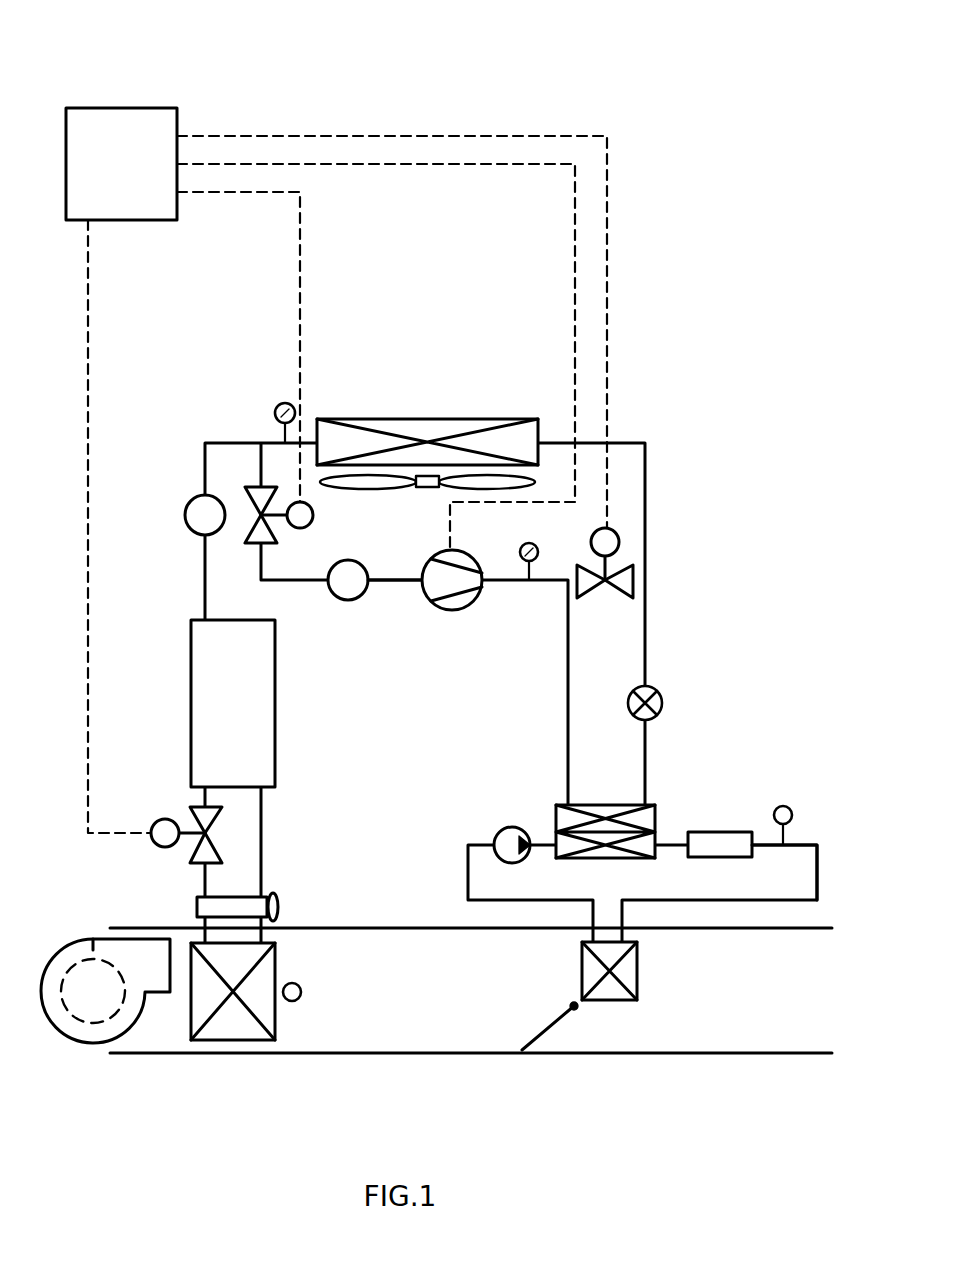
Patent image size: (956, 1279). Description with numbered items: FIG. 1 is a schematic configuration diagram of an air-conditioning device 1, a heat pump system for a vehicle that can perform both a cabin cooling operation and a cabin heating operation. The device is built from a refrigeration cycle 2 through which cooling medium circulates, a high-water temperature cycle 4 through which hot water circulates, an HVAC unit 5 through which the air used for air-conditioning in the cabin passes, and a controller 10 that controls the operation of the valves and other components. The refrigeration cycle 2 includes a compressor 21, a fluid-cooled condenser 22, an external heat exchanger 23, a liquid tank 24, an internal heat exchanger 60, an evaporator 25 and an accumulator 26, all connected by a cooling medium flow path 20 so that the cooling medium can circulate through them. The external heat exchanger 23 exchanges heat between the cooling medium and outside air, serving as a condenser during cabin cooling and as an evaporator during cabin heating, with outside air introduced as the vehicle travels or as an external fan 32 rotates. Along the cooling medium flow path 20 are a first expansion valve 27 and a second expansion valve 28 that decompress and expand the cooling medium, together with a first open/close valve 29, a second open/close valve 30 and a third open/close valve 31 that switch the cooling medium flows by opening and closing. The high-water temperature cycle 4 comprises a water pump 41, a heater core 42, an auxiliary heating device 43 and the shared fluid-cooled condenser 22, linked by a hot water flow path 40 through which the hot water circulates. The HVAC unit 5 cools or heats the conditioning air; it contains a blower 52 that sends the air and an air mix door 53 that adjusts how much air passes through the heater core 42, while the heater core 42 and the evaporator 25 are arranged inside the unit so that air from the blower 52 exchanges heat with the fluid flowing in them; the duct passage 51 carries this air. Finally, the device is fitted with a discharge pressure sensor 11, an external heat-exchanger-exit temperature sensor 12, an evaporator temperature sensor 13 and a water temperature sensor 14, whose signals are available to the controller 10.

The air-conditioning device 1 is at (683, 96).
The refrigeration cycle 2 is at (218, 342).
The high-water temperature cycle 4 is at (454, 860).
The HVAC unit 5 is at (398, 1086).
The controller 10 is at (118, 140).
The discharge pressure sensor 11 is at (534, 547).
The external heat-exchanger-exit temperature sensor 12 is at (279, 405).
The evaporator temperature sensor 13 is at (302, 995).
The water temperature sensor 14 is at (783, 806).
The cooling medium flow path 20 is at (398, 583).
The compressor 21 is at (454, 600).
The fluid-cooled condenser 22 is at (649, 815).
The external heat exchanger 23 is at (420, 427).
The liquid tank 24 is at (196, 520).
The evaporator 25 is at (240, 1025).
The accumulator 26 is at (348, 590).
The first expansion valve 27 is at (661, 707).
The second expansion valve 28 is at (215, 908).
The first open/close valve 29 is at (628, 578).
The second open/close valve 30 is at (256, 490).
The third open/close valve 31 is at (203, 820).
The external fan 32 is at (423, 490).
The hot water flow path 40 is at (803, 843).
The water pump 41 is at (506, 830).
The heater core 42 is at (640, 975).
The auxiliary heating device 43 is at (721, 838).
The duct 51 is at (468, 1056).
The blower 52 is at (98, 1005).
The air mix door 53 is at (552, 1028).
The internal heat exchanger 60 is at (218, 702).